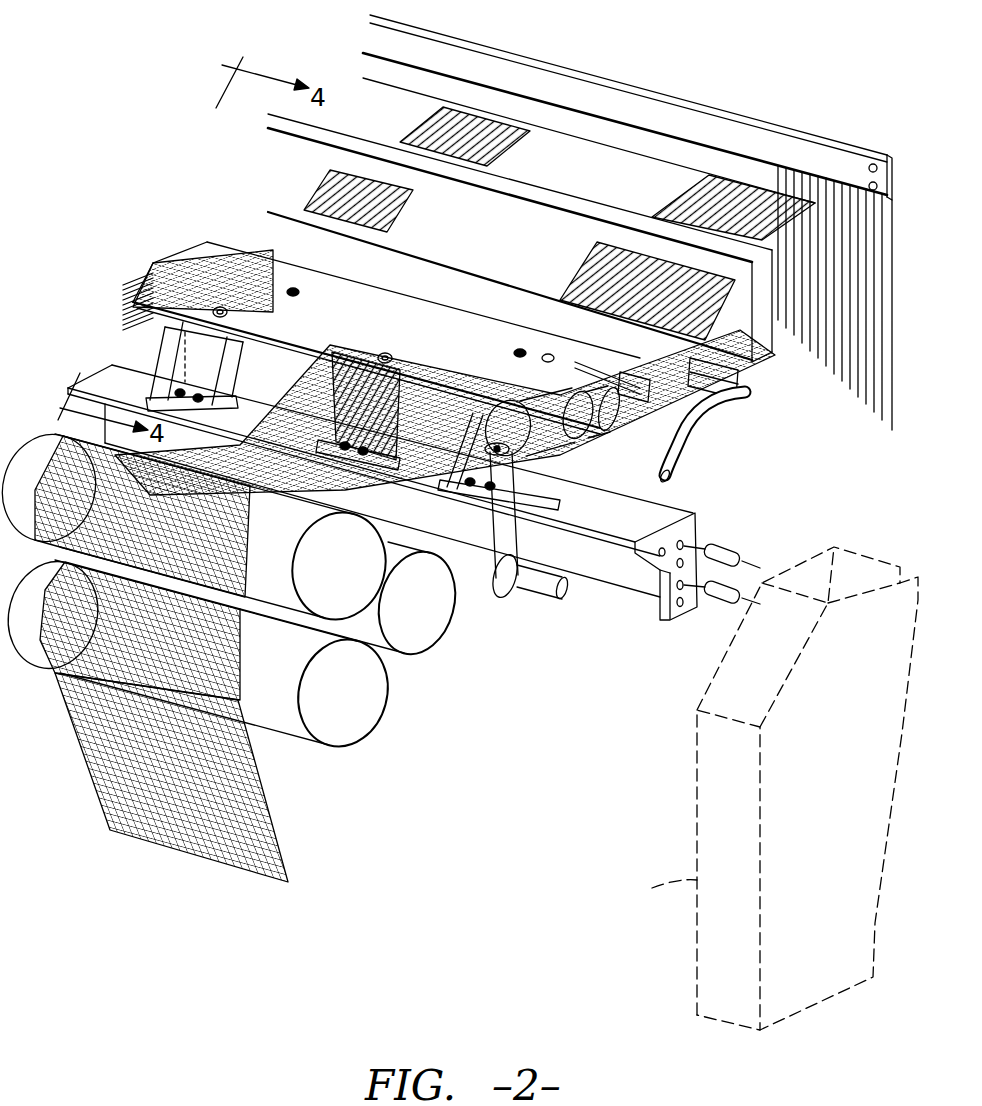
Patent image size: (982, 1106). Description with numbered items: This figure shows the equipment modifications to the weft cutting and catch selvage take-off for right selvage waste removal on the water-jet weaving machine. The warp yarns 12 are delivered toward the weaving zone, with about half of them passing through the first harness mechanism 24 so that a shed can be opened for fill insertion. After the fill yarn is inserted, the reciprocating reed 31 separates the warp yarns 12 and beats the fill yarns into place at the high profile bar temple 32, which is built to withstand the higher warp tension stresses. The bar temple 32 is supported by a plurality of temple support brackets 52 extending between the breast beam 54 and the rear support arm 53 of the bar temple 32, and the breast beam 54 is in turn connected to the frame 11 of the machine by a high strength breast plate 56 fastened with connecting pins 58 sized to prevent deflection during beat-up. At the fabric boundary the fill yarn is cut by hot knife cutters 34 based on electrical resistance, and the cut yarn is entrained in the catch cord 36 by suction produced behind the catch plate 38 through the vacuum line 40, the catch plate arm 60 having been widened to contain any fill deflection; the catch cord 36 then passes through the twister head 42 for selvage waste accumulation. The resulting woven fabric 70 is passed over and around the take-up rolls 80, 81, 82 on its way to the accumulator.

The base structure 11 is at (662, 884).
The warp yarns 12 is at (410, 133).
The first harness mechanism 24 is at (687, 100).
The reciprocating reed 31 is at (774, 342).
The bar temple 32 is at (198, 238).
The hot knife cutters 34 is at (585, 407).
The catch cord 36 is at (617, 400).
The catch plate 38 is at (729, 372).
The vacuum line 40 is at (694, 440).
The twister head 42 is at (572, 432).
The temple support brackets 52 is at (173, 362).
The rear support arm 53 is at (600, 592).
The breast beam 54 is at (318, 367).
The breast plate 56 is at (695, 512).
The connecting pins 58 is at (742, 593).
The catch plate arm 60 is at (622, 393).
The woven fabric 70 is at (253, 777).
The take-up roll 80 is at (52, 458).
The take-up roll 81 is at (450, 623).
The take-up roll 82 is at (385, 698).